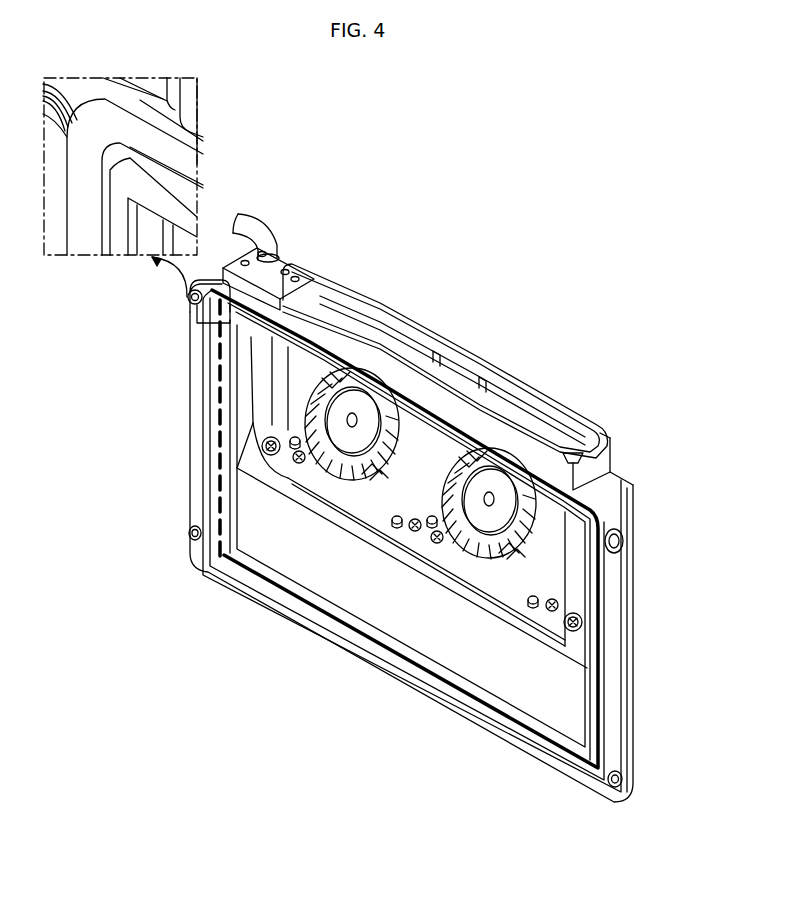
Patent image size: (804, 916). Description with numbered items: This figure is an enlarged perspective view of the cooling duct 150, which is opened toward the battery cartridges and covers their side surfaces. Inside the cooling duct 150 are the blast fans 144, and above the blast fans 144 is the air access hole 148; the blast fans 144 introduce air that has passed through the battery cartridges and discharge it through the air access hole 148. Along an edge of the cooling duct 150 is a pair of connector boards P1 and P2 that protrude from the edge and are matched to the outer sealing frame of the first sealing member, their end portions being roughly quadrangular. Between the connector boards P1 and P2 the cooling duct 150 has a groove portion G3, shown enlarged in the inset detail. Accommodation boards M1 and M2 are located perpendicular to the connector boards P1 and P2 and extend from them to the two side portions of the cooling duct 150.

The blast fans 144 is at (330, 409).
The air access hole 148 is at (570, 407).
The cooling duct 150 is at (351, 672).
The accommodation board M1 is at (617, 697).
The accommodation board M2 is at (190, 486).
The groove portion G3 is at (187, 190).
The connector board P1 is at (74, 255).
The connector board P2 is at (119, 255).